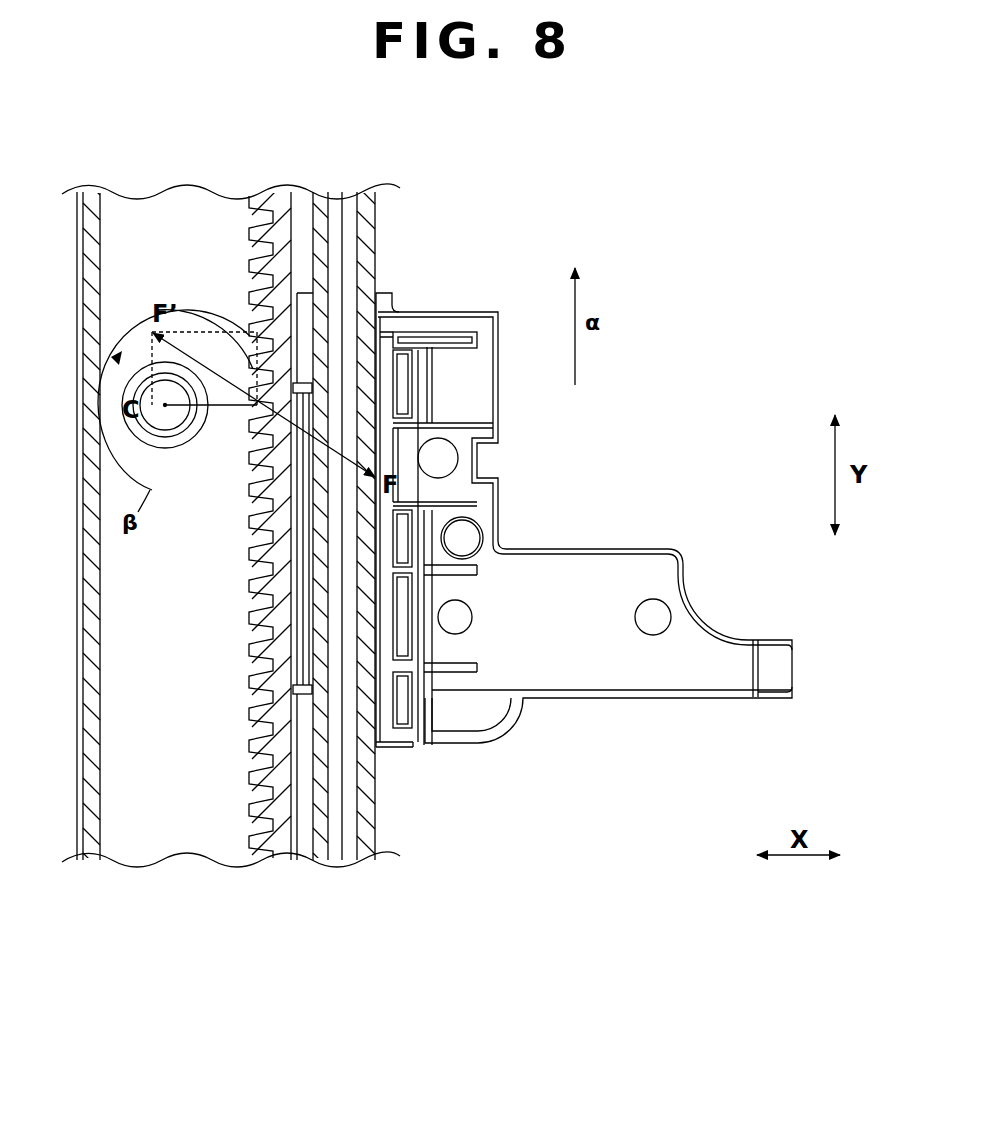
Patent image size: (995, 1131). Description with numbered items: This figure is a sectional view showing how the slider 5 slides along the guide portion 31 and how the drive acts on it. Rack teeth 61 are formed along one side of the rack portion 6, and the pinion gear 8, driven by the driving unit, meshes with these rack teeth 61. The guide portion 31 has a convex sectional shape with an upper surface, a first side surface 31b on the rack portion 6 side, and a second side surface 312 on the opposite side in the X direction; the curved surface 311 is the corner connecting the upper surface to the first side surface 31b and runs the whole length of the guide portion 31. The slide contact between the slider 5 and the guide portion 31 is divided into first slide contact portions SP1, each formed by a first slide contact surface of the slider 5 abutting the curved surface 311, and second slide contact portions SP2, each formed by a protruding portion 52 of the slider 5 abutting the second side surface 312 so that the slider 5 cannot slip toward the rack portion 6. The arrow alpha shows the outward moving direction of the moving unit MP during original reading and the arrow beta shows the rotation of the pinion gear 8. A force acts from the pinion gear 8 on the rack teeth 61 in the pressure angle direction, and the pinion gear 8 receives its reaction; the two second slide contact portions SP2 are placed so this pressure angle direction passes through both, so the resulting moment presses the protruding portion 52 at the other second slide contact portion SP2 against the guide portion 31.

The slider 5 is at (593, 572).
The protruding portion 52 is at (412, 348).
The rack portion 6 is at (263, 860).
The rack teeth 61 is at (258, 528).
The pinion gear 8 is at (200, 470).
The guide portion 31 is at (350, 890).
The first side surface 31b is at (303, 862).
The curved surface 311 is at (304, 383).
The second side surface 312 is at (376, 831).
The first slide contact portion SP1 is at (296, 368).
The second slide contact portion SP2 is at (387, 331).
The moving unit MP is at (724, 362).